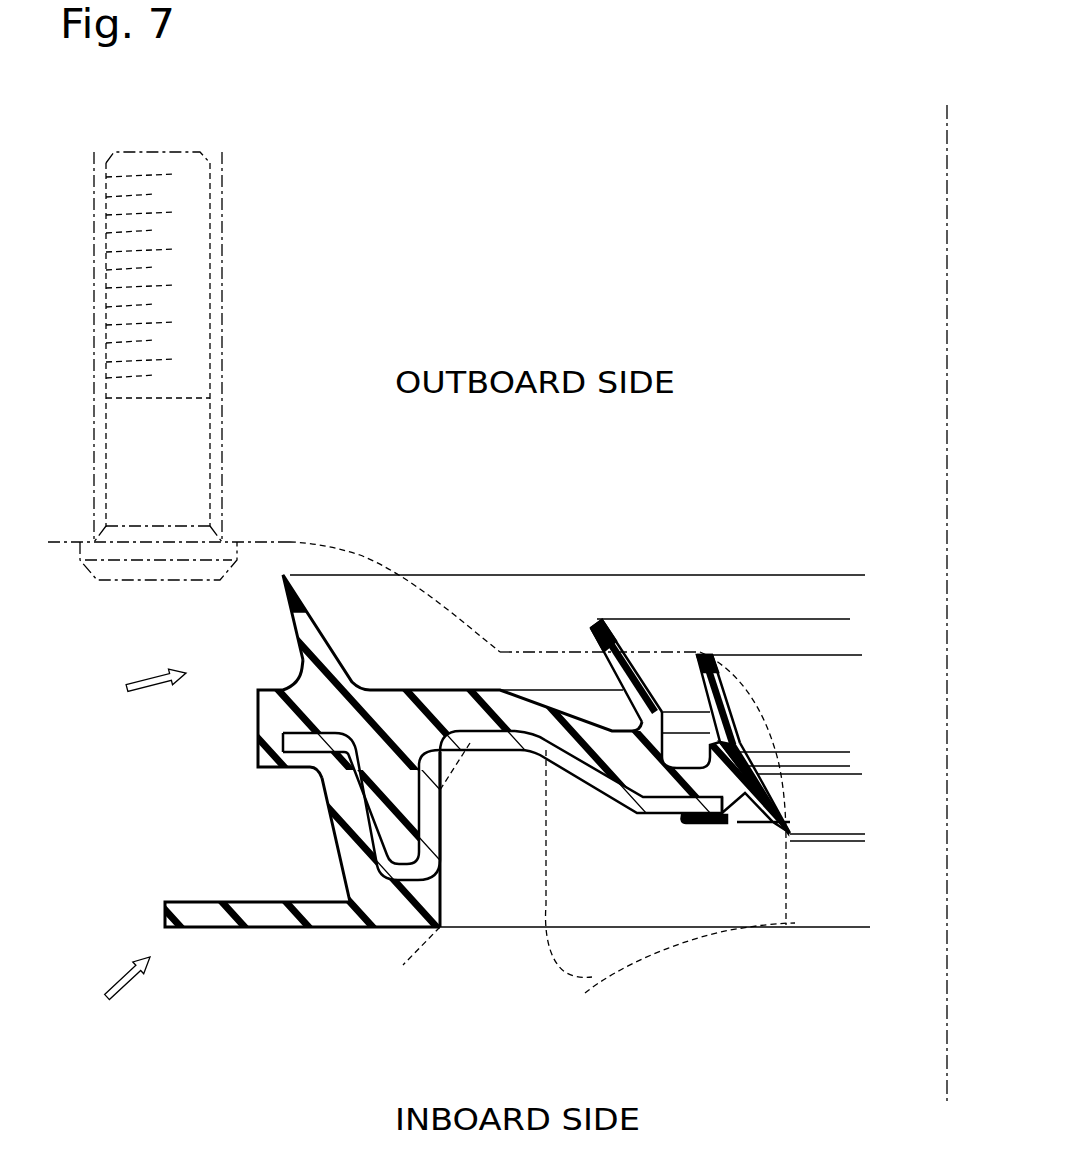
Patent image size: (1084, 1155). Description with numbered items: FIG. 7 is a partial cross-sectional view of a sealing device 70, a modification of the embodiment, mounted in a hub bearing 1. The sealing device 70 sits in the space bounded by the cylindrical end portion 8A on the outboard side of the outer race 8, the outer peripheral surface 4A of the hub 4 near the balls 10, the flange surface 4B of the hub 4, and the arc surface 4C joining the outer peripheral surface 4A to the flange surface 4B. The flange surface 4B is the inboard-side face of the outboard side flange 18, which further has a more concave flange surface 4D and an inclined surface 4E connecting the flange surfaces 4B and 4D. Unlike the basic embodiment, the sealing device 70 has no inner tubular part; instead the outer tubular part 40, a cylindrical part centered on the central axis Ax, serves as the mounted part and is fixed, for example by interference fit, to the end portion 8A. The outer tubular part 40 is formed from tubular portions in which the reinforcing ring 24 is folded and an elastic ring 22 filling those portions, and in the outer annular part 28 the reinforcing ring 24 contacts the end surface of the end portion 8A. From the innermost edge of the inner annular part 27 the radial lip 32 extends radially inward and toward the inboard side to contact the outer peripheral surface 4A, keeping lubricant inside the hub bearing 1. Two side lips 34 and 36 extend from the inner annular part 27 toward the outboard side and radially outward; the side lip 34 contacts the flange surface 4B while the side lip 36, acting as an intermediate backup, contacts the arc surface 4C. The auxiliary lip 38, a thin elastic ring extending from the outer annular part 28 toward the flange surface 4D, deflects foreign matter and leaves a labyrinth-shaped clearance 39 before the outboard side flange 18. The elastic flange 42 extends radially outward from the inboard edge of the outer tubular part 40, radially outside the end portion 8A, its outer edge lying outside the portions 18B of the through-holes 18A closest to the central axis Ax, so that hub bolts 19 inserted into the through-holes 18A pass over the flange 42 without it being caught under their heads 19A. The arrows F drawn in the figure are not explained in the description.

The hub bearing 1 is at (258, 797).
The hub 4 is at (805, 920).
The outer peripheral surface 4A is at (786, 886).
The flange surface 4B is at (565, 650).
The arc surface 4C is at (768, 722).
The flange surface 4D is at (300, 545).
The inclined surface 4E is at (437, 622).
The outer race 8 is at (550, 887).
The cylindrical end portion 8A is at (550, 857).
The balls 10 is at (827, 935).
The outboard side flange 18 is at (272, 547).
The through-holes 18A is at (78, 465).
The portions 18B is at (213, 348).
The hub bolts 19 is at (215, 385).
The heads 19A is at (100, 585).
The elastic ring 22 is at (258, 706).
The reinforcing ring 24 is at (502, 752).
The inner annular part 27 is at (592, 795).
The outer annular part 28 is at (455, 693).
The radial lip 32 is at (792, 833).
The side lip 34 is at (618, 637).
The side lip 36 is at (730, 661).
The auxiliary lip 38 is at (298, 612).
The clearance 39 is at (283, 578).
The outer tubular part 40 is at (350, 862).
The flange 42 is at (213, 905).
The sealing device 70 is at (593, 560).
The central axis Ax is at (947, 1098).
The force direction F is at (129, 830).